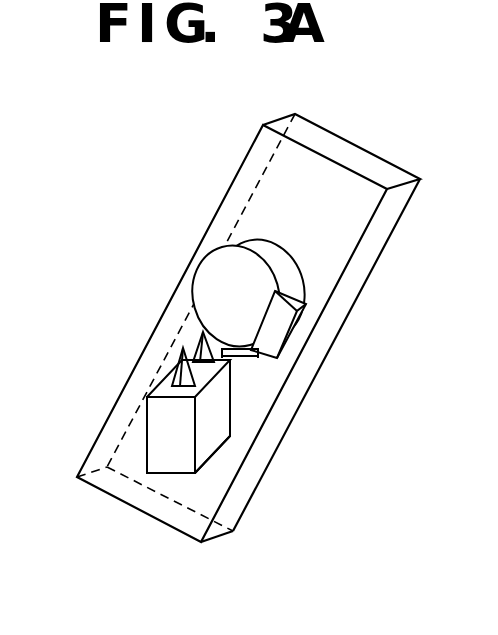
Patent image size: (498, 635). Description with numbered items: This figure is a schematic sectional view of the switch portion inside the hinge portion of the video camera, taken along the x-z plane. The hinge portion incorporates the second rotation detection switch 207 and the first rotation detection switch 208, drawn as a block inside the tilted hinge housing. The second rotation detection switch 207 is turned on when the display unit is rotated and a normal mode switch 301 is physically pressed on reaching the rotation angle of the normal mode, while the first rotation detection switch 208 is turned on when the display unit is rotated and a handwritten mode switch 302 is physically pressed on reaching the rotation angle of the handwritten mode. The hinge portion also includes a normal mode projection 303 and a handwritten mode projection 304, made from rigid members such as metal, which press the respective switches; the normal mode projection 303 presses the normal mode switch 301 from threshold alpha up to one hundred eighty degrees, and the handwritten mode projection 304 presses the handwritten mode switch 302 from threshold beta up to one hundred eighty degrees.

The second rotation detection switch 207 is at (168, 468).
The first rotation detection switch 208 is at (226, 434).
The normal mode switch 301 is at (183, 366).
The handwritten mode switch 302 is at (195, 336).
The normal mode projection 303 is at (283, 332).
The handwritten mode projection 304 is at (246, 357).